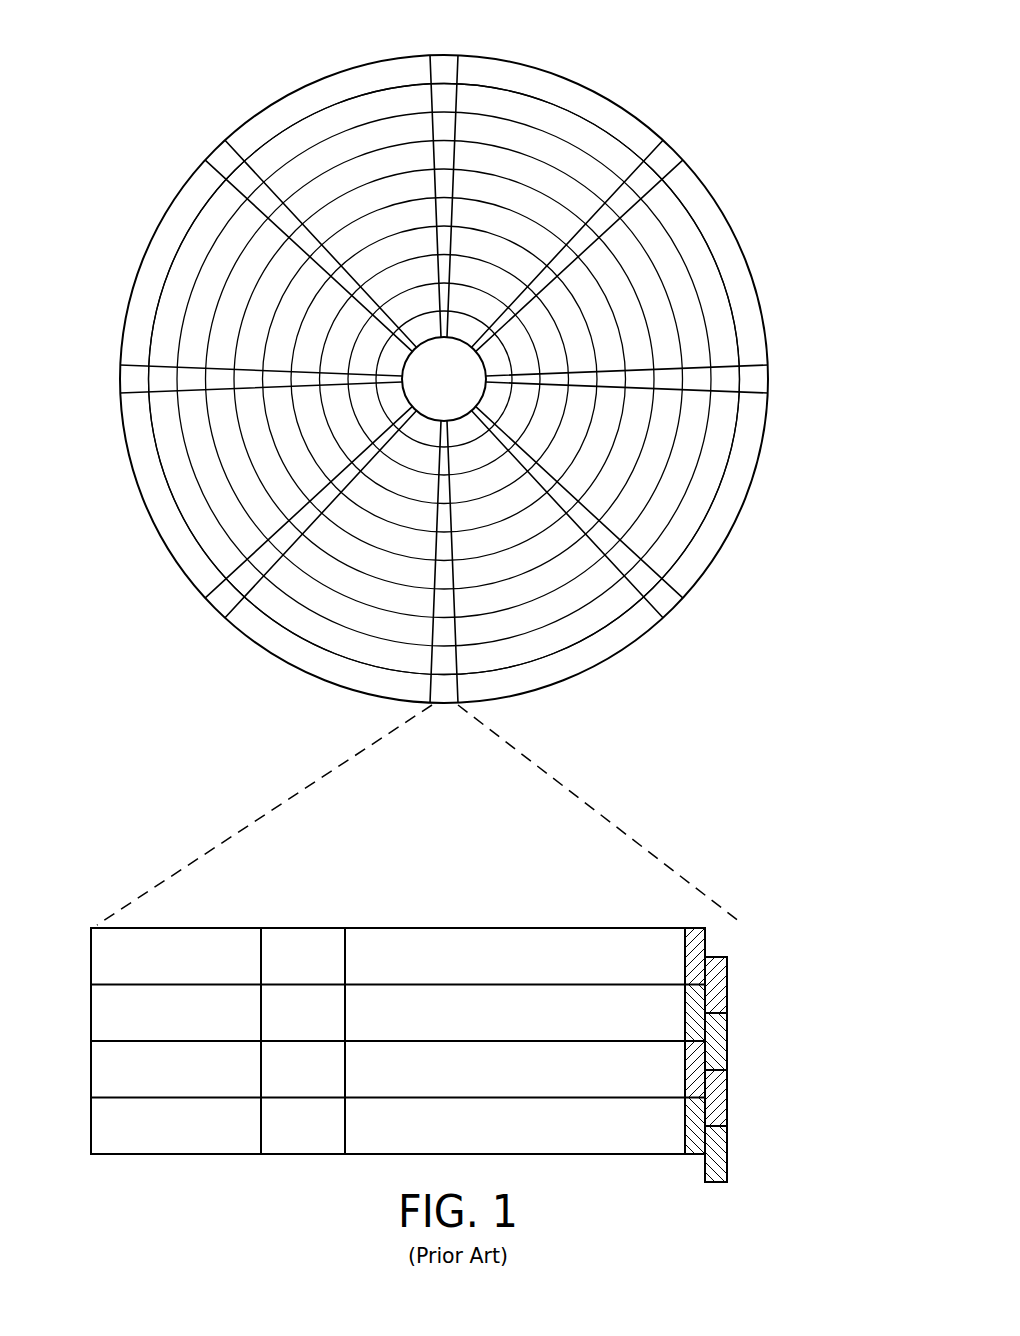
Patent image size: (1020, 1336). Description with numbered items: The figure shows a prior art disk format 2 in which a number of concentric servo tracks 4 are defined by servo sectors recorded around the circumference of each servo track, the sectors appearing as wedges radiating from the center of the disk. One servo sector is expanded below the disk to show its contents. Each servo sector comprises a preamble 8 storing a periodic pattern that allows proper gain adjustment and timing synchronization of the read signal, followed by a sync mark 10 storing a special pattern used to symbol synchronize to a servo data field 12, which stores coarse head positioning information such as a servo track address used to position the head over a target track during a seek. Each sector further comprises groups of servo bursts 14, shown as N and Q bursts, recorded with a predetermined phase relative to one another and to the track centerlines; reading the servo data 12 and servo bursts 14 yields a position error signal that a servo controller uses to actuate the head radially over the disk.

The disk format 2 is at (202, 58).
The servo track 4 is at (553, 118).
The preamble 8 is at (185, 928).
The sync mark 10 is at (307, 928).
The servo data field 12 is at (505, 928).
The servo bursts 14 is at (725, 924).